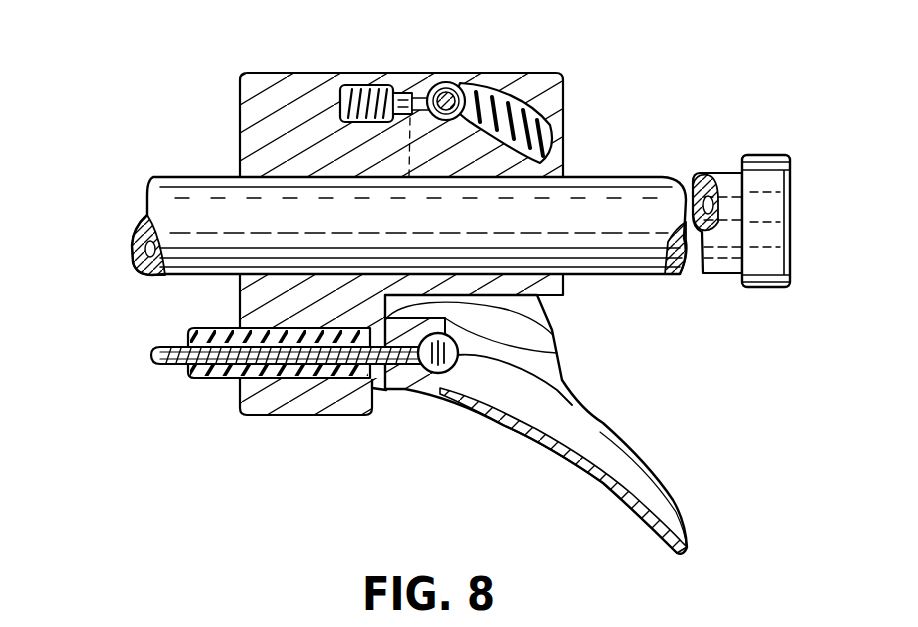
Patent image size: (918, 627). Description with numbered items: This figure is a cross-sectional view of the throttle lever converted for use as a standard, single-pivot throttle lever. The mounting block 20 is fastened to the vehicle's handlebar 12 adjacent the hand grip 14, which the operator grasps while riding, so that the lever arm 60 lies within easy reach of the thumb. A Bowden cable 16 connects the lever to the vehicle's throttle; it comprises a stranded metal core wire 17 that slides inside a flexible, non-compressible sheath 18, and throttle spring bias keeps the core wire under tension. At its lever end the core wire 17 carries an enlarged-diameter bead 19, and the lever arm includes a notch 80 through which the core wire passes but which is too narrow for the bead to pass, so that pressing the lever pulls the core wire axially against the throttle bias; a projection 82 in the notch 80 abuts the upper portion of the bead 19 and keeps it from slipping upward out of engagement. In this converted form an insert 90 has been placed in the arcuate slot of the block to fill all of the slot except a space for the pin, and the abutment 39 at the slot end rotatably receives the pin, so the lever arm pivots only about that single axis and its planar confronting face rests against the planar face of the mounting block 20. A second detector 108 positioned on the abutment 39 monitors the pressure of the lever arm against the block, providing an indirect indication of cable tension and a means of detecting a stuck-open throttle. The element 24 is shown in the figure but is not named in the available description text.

The coupling assembly 20 is at (200, 88).
The housing block 24 is at (280, 100).
The set screw 108 is at (372, 72).
The retaining ring 39 is at (437, 82).
The spring cable 90 is at (520, 118).
The tube 12 is at (128, 240).
The end fitting 14 is at (722, 187).
The threaded bolt 16 is at (128, 376).
The threaded sleeve nut 18 is at (213, 390).
The notch 17 is at (390, 400).
The lever 80 is at (518, 314).
The pivot ball 82 is at (548, 346).
The lever contour line 19 is at (560, 388).
The lever assembly 60 is at (706, 498).